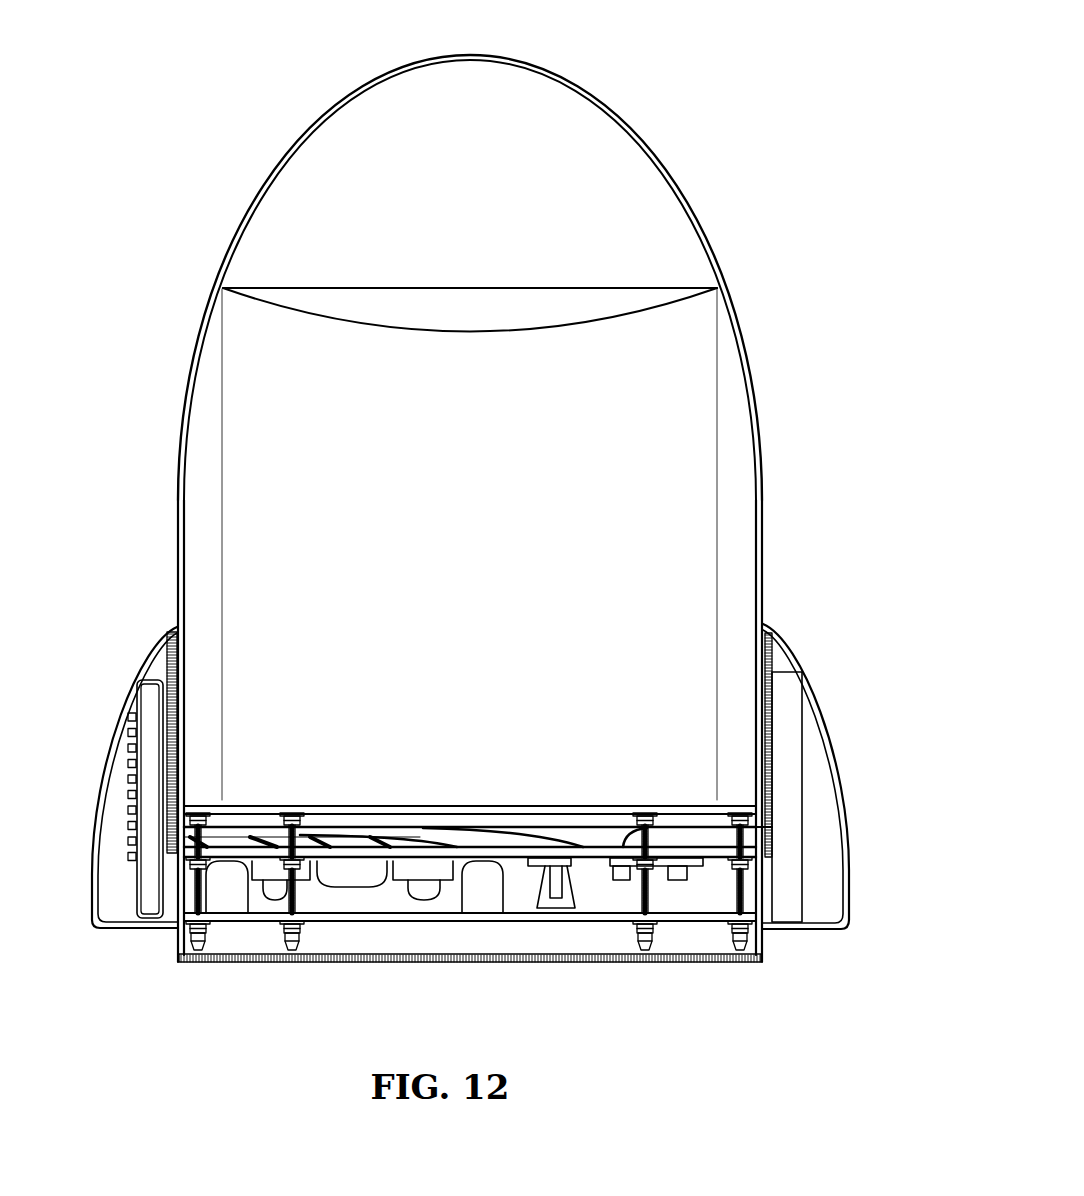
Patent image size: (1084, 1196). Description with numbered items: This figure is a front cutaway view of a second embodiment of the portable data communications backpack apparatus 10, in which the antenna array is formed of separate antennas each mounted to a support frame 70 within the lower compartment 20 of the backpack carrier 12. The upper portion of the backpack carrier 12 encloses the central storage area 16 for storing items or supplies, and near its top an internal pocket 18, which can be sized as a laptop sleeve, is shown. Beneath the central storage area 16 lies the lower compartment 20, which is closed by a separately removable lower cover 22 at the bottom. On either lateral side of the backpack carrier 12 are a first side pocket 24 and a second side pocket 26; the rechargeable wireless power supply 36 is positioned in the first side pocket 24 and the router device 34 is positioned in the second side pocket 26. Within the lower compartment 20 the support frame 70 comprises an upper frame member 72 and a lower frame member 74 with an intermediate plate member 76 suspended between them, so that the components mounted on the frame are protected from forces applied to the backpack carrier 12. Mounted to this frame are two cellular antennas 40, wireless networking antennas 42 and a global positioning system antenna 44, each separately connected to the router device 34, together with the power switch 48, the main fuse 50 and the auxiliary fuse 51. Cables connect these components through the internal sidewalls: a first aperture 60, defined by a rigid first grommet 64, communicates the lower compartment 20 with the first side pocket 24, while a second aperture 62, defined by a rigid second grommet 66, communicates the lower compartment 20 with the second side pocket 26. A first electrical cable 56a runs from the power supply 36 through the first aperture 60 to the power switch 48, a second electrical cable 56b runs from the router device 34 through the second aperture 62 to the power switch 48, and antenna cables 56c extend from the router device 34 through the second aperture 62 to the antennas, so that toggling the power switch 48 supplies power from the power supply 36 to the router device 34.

The portable data communications backpack apparatus 10 is at (695, 110).
The backpack carrier 12 is at (268, 181).
The central storage area 16 is at (456, 481).
The internal pocket 18 is at (598, 307).
The lower compartment 20 is at (535, 935).
The lower cover 22 is at (588, 963).
The first side pocket 24 is at (788, 632).
The second side pocket 26 is at (162, 628).
The router device 34 is at (150, 693).
The rechargeable wireless power supply 36 is at (790, 703).
The cellular antenna 40 is at (222, 903).
The wireless networking antenna 42 is at (283, 892).
The global positioning system antenna 44 is at (358, 877).
The power switch 48 is at (572, 858).
The main fuse 50 is at (645, 880).
The auxiliary fuse 51 is at (670, 880).
The first electrical cable 56a is at (698, 833).
The second electrical cable 56b is at (323, 830).
The electrical antenna cable 56c is at (252, 837).
The first aperture 60 is at (772, 828).
The second aperture 62 is at (167, 848).
The first grommet 64 is at (778, 817).
The second grommet 66 is at (165, 822).
The support frame 70 is at (405, 815).
The upper frame member 72 is at (448, 813).
The lower frame member 74 is at (748, 928).
The intermediate plate member 76 is at (525, 858).